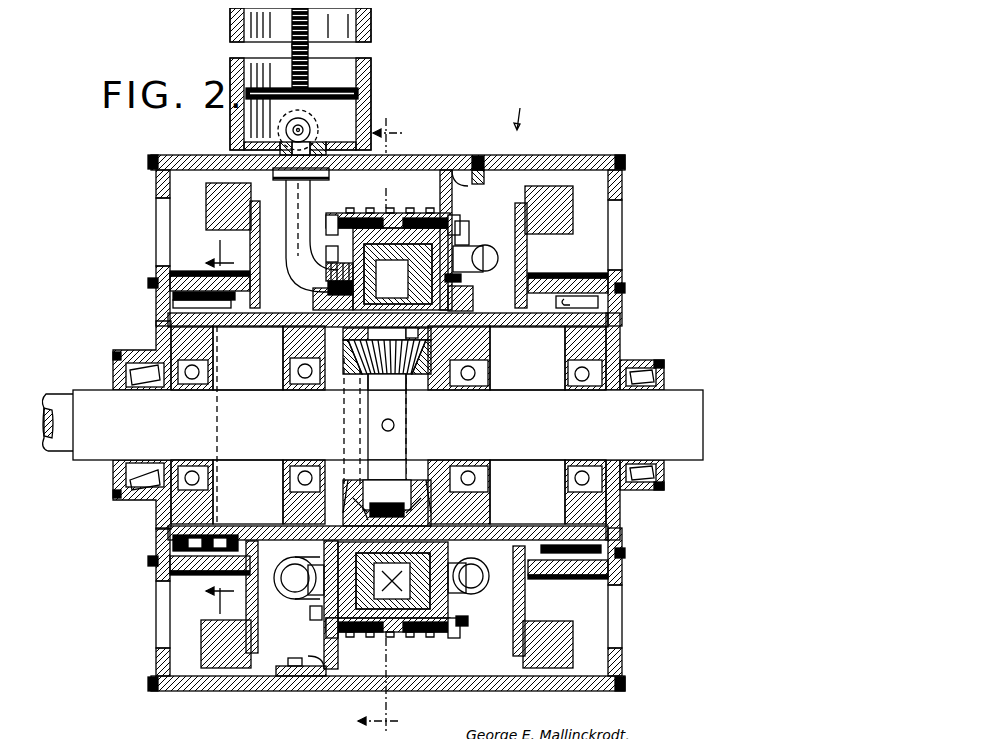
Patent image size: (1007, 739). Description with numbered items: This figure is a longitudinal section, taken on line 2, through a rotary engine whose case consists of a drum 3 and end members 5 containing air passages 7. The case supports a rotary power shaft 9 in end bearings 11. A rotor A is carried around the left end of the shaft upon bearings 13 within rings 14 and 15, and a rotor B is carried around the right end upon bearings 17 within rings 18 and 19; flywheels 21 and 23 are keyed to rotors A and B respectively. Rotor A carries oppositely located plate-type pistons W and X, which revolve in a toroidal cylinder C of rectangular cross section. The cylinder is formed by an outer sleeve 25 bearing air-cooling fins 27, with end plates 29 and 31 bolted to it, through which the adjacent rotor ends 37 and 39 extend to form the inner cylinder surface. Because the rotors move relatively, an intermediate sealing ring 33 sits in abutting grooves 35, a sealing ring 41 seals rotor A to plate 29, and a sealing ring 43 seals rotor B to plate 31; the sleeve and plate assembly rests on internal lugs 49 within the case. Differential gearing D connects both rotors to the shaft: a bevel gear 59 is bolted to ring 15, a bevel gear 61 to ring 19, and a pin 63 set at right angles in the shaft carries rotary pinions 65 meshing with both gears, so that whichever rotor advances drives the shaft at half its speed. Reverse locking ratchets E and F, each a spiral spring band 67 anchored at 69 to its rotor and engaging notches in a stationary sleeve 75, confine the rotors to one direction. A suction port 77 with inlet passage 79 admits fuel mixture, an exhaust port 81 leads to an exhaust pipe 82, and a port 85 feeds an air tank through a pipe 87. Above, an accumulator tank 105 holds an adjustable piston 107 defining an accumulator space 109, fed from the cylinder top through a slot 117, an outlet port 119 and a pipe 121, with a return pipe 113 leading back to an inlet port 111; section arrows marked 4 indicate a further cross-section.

The section line 2- 2 is at (532, 427).
The drum 3 is at (442, 138).
The section line 4- 4 is at (220, 427).
The end members 5 is at (148, 178).
The air passages 7 is at (148, 258).
The rotary power shaft 9 is at (90, 395).
The end bearings 11 is at (128, 352).
The bearings 13 is at (183, 380).
The ring 14 is at (150, 316).
The ring 15 is at (300, 323).
The bearings 17 is at (470, 368).
The ring 18 is at (605, 318).
The ring 19 is at (470, 326).
The flywheel 21 is at (198, 190).
The flywheel 23 is at (560, 208).
The outer sleeve 25 is at (392, 205).
The air-cooling fins 27 is at (366, 206).
The end plate 29 is at (330, 208).
The end plate 31 is at (445, 270).
The sealing ring 33 is at (387, 503).
The abutting grooves 35 is at (421, 502).
The rotor end 37 is at (387, 349).
The rotor end 39 is at (395, 340).
The sealing ring 41 is at (325, 293).
The sealing ring 43 is at (445, 292).
The internal lugs 49 is at (448, 180).
The bevel gear 59 is at (340, 370).
The bevel gear 61 is at (410, 375).
The pin 63 is at (380, 424).
The rotary pinions 65 is at (280, 500).
The spiral spring band 67 is at (150, 282).
The anchor 69 is at (165, 535).
The stationary sleeve 75 is at (184, 268).
The suction port 77 is at (452, 590).
The inlet passage 79 is at (468, 584).
The exhaust port 81 is at (302, 600).
The exhaust pipe 82 is at (280, 588).
The port 85 is at (471, 231).
The pipe 87 is at (480, 252).
The accumulator tank 105 is at (363, 15).
The adjustable piston 107 is at (328, 80).
The accumulator space 109 is at (222, 118).
The inlet port 111 is at (318, 246).
The return pipe 113 is at (304, 118).
The slot 117 is at (318, 264).
The outlet port 119 is at (283, 272).
The pipe 121 is at (278, 185).
The rotor A is at (256, 341).
The rotor B is at (528, 337).
The toroidal cylinder C is at (378, 196).
The differential gearing D is at (335, 445).
The reverse locking ratchet E is at (148, 300).
The reverse locking ratchet F is at (614, 302).
The plate-type piston W is at (400, 269).
The plate-type piston X is at (393, 580).